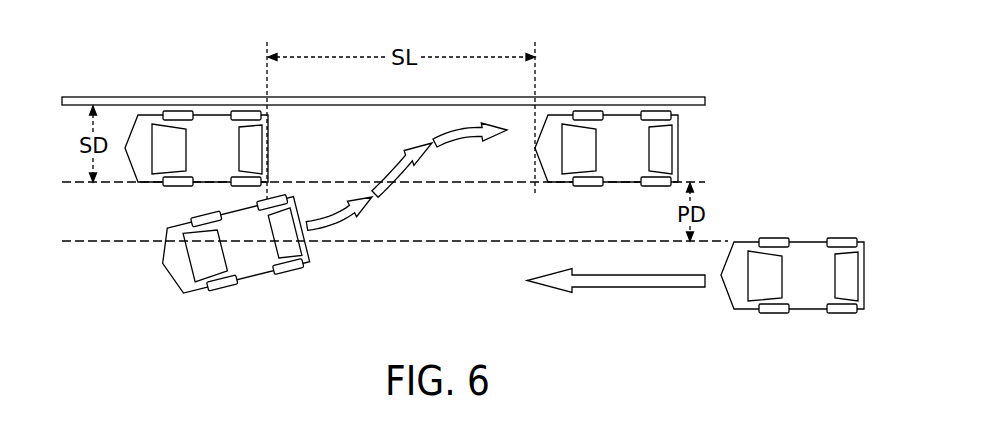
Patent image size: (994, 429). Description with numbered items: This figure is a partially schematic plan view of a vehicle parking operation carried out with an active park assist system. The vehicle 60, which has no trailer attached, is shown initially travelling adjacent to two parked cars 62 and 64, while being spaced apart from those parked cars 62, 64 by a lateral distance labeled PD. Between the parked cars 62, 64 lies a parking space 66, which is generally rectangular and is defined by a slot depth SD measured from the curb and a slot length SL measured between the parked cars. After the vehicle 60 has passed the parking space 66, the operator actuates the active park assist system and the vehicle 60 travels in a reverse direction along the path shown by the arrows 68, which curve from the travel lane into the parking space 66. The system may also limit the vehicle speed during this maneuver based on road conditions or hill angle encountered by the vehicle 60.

The vehicle 60 is at (260, 277).
The parked car 62 is at (620, 115).
The parked car 64 is at (208, 113).
The parking space 66 is at (331, 156).
The arrows 68 is at (360, 208).